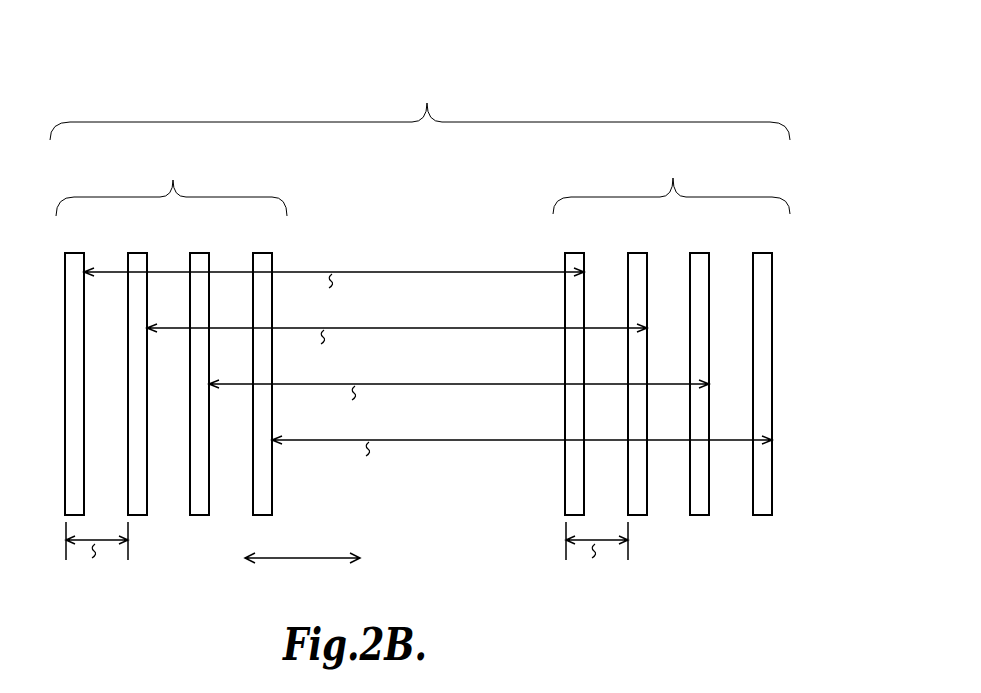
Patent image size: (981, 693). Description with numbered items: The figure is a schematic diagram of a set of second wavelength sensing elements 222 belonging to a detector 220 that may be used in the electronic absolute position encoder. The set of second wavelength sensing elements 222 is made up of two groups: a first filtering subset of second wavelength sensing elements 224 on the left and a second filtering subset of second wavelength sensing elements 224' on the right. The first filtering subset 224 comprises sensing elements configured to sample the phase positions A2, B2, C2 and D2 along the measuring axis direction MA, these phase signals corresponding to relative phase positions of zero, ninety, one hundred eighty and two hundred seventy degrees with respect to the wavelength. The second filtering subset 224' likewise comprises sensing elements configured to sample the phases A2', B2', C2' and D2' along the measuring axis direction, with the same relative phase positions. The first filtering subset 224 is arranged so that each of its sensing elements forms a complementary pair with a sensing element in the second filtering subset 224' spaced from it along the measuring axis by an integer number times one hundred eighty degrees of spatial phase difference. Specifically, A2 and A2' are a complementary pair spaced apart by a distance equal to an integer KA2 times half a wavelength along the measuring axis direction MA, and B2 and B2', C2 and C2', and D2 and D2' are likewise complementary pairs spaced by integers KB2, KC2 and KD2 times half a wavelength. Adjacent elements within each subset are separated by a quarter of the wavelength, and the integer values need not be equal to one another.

The detector 220 is at (728, 80).
The set of second wavelength sensing elements 222 is at (420, 292).
The first filtering subset of second wavelength sensing elements 224 is at (171, 331).
The second filtering subset of second wavelength sensing elements 224' is at (671, 331).
The phase position A2 is at (74, 369).
The phase position B2 is at (138, 369).
The phase position C2 is at (200, 369).
The phase position D2 is at (264, 369).
The phase position A2' is at (576, 369).
The phase position B2' is at (642, 369).
The phase position C2' is at (705, 369).
The phase position D2' is at (769, 369).